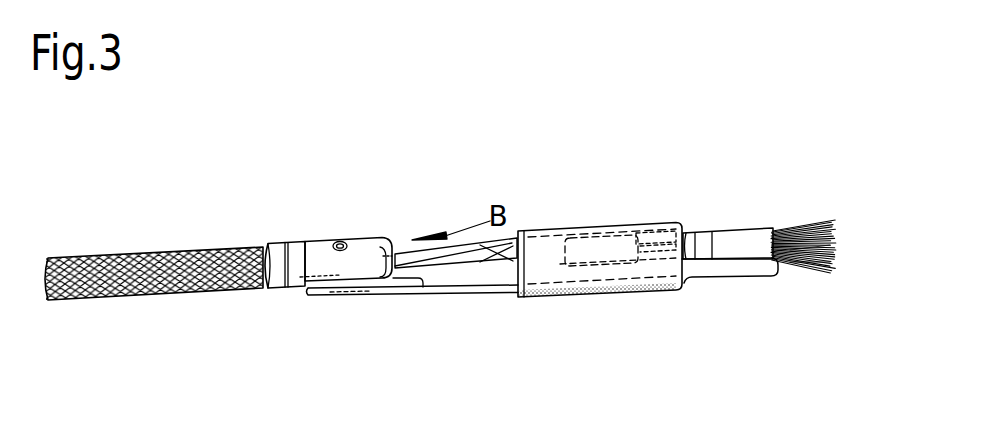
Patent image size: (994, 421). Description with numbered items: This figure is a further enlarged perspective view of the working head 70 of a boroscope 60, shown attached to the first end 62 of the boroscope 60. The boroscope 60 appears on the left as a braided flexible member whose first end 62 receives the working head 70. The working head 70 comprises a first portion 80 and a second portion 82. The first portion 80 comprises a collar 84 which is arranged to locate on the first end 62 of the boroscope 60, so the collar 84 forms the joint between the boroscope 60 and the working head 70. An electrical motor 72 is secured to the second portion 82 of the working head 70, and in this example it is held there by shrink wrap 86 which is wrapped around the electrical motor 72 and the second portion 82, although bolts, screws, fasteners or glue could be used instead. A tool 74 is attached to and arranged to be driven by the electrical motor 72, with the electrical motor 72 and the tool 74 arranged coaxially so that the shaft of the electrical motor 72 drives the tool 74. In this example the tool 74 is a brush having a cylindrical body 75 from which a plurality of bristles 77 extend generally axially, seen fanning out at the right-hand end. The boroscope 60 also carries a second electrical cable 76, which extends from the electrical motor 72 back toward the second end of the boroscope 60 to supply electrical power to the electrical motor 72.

The boroscope 60 is at (170, 250).
The first end 62 is at (291, 243).
The collar 84 is at (362, 247).
The first portion 80 is at (375, 290).
The second electrical cable 76 is at (453, 262).
The working head 70 is at (615, 223).
The shrink wrap 86 is at (568, 231).
The electrical motor 72 is at (647, 232).
The cylindrical body 75 is at (741, 237).
The second portion 82 is at (699, 283).
The tool 74 is at (803, 228).
The bristles 77 is at (821, 268).